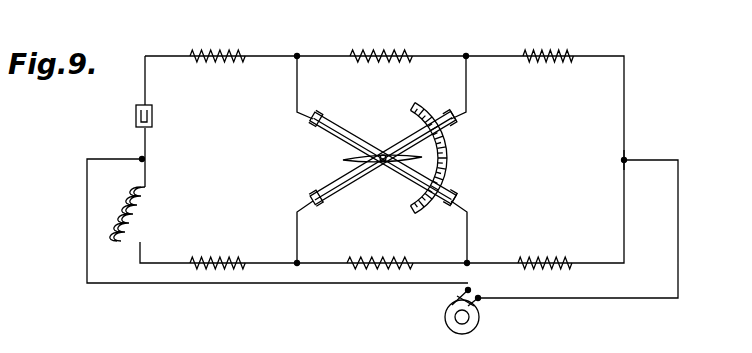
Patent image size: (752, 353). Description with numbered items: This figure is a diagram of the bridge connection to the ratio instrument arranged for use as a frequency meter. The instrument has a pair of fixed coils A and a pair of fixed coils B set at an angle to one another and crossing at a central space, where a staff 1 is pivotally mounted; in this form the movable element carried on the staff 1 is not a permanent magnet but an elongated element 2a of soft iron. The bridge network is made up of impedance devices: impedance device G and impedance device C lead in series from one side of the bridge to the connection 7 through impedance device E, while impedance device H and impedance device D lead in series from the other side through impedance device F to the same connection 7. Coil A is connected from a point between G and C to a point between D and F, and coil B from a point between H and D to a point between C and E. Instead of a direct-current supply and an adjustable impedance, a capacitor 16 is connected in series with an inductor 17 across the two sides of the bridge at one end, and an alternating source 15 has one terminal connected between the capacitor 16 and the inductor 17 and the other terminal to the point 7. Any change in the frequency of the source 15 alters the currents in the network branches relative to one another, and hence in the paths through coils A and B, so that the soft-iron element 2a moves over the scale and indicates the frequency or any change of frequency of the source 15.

The staff 1 is at (383, 154).
The elongated element of soft iron 2a is at (345, 159).
The connection 7 is at (615, 160).
The alternating source 15 is at (473, 311).
The capacitor 16 is at (157, 114).
The inductor 17 is at (140, 214).
The fixed coils A is at (346, 119).
The fixed coils B is at (328, 203).
The impedance device C is at (381, 45).
The impedance device D is at (380, 252).
The impedance device E is at (548, 45).
The impedance device F is at (545, 251).
The impedance device G is at (217, 45).
The impedance device H is at (217, 252).